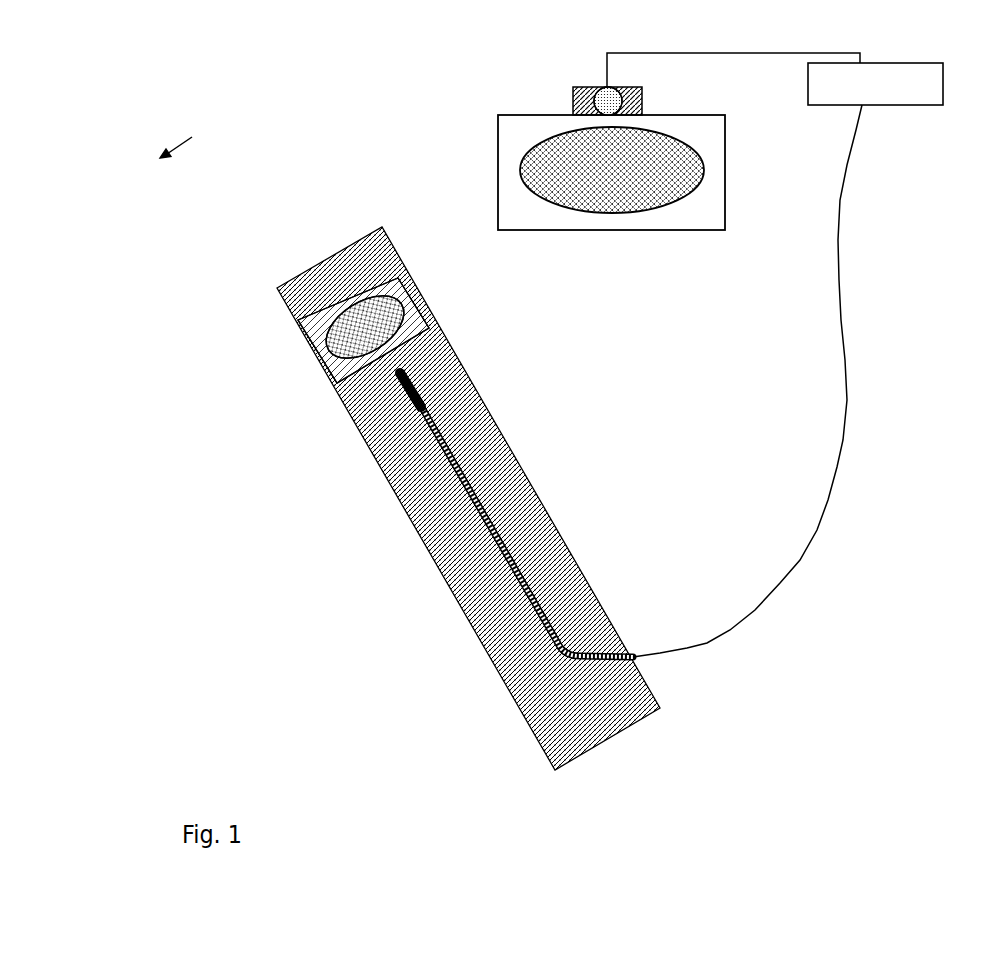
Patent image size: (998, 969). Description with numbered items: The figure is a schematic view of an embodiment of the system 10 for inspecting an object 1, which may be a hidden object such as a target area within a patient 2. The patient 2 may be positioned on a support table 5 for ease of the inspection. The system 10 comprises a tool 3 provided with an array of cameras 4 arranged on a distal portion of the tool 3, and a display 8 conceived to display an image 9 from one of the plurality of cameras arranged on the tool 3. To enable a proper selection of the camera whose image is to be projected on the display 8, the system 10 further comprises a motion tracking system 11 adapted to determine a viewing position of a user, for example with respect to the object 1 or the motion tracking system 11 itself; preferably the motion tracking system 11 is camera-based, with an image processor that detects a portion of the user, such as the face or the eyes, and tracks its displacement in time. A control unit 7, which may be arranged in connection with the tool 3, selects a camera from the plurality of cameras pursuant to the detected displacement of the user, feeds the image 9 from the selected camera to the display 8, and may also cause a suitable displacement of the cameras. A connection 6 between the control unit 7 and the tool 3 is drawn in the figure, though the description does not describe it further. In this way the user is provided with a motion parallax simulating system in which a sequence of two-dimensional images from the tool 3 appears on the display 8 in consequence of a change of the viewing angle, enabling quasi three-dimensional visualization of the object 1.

The object 1 is at (317, 355).
The patient 2 is at (293, 320).
The tool 3 is at (432, 445).
The array of cameras 4 is at (420, 380).
The support table 5 is at (437, 560).
The cable 6 is at (778, 582).
The control unit 7 is at (902, 105).
The display 8 is at (498, 137).
The image 9 is at (643, 210).
The system 10 is at (192, 137).
The motion tracking system 11 is at (573, 93).